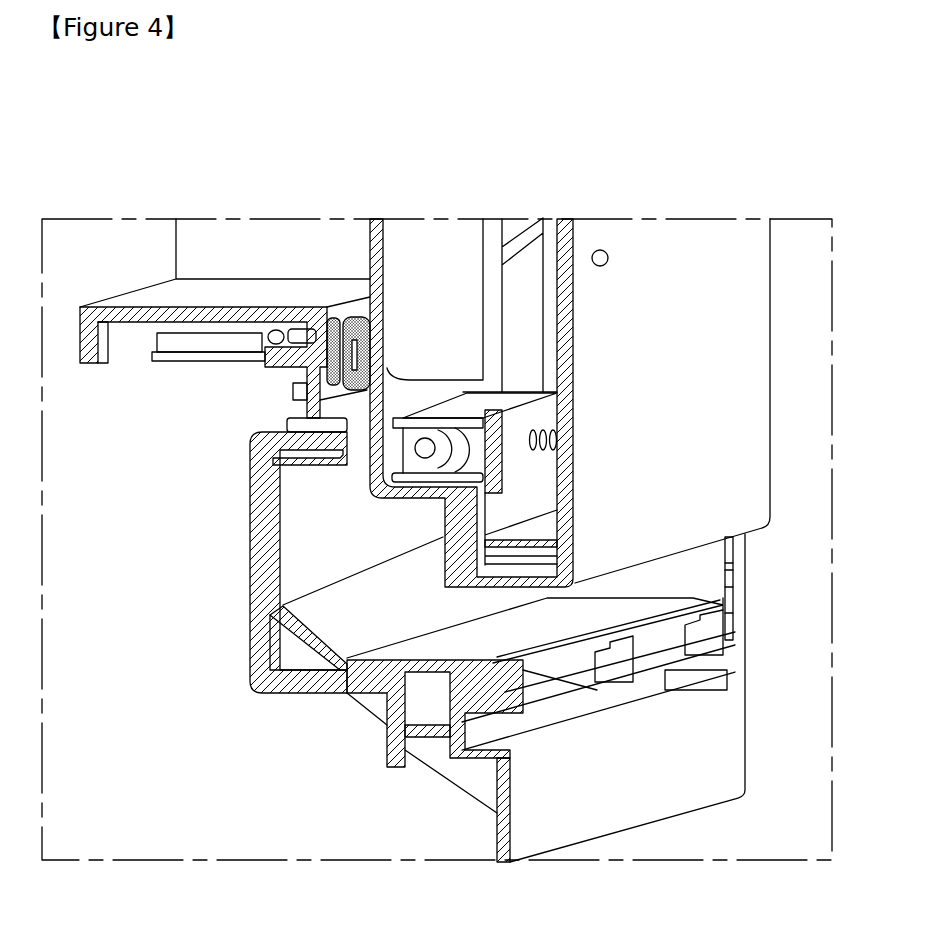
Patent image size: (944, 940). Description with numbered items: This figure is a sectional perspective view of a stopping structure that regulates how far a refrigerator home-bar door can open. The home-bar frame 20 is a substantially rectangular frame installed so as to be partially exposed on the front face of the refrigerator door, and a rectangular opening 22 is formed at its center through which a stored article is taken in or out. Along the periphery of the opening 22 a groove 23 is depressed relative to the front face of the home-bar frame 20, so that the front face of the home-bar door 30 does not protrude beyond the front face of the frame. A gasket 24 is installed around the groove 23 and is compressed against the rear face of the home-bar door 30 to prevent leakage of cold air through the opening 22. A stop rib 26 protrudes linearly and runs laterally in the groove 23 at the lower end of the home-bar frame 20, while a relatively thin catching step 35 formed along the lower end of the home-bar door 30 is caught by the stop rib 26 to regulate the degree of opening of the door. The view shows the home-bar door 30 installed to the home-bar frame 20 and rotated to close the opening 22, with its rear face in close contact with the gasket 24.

The home-bar frame 20 is at (592, 815).
The opening 22 is at (278, 270).
The groove 23 is at (432, 626).
The gasket 24 is at (360, 312).
The stop rib 26 is at (367, 455).
The home-bar door 30 is at (702, 248).
The catching step 35 is at (453, 533).